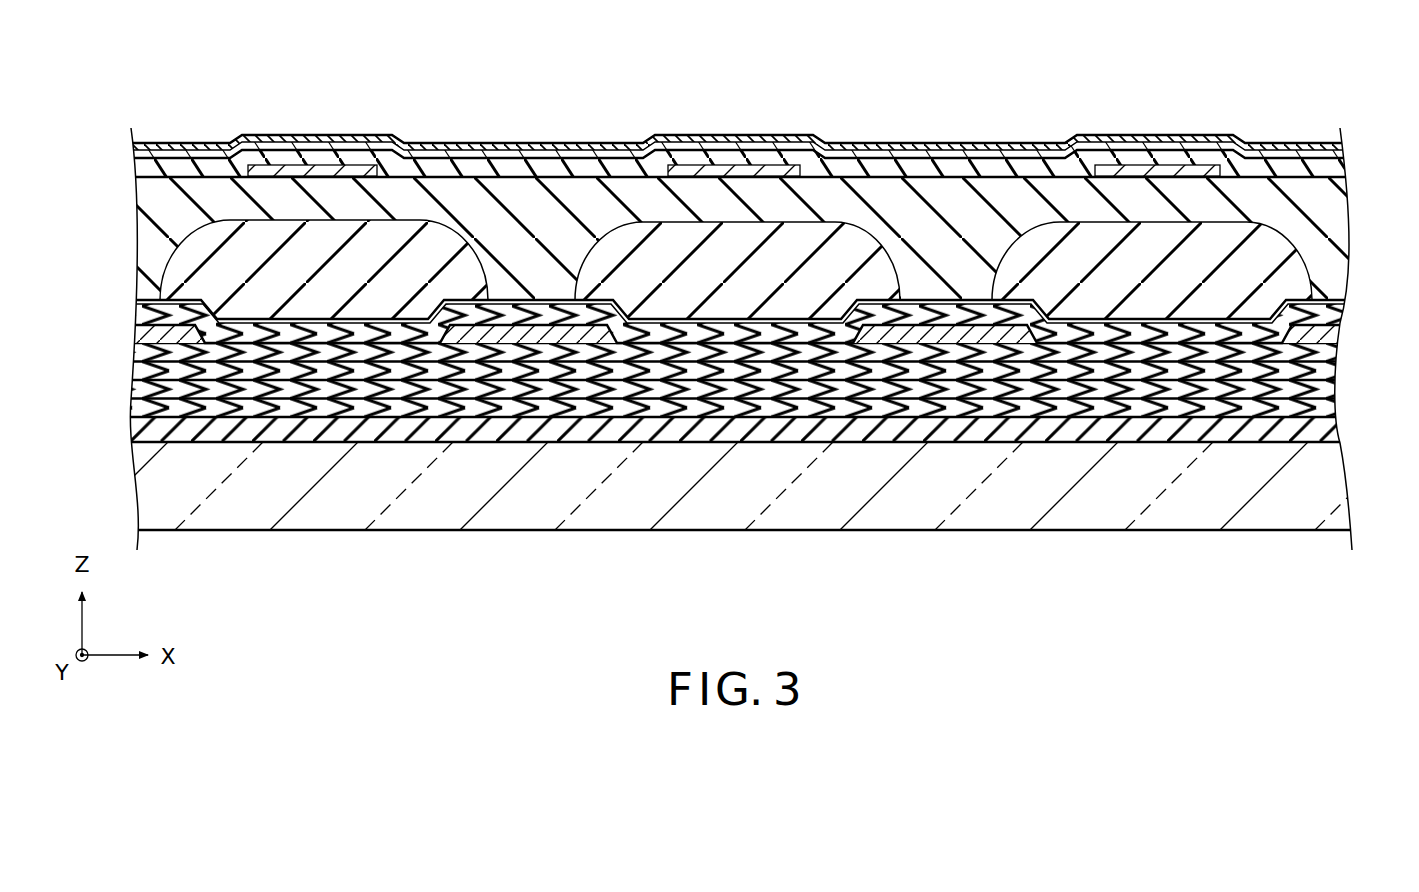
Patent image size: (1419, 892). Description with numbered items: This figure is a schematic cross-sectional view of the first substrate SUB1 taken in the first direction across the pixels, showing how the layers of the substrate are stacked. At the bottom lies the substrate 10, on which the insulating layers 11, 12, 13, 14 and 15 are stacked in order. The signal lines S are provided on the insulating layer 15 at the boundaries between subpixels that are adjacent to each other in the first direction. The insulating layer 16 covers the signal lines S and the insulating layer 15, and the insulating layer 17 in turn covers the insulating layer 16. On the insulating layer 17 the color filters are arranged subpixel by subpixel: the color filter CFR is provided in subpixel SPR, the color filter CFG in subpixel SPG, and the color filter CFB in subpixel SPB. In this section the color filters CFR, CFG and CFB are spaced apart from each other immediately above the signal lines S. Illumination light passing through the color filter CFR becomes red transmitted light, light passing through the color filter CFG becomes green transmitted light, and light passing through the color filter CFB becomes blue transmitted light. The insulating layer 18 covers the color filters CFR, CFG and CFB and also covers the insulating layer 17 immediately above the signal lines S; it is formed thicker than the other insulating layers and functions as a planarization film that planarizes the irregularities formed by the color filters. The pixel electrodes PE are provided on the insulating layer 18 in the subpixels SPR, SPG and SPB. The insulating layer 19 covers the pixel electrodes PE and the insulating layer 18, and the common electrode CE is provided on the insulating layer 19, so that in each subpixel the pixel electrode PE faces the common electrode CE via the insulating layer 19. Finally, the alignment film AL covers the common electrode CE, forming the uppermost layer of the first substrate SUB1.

The first substrate SUB1 is at (1340, 95).
The substrate 10 is at (1340, 470).
The insulating layer 11 is at (1334, 433).
The insulating layer 12 is at (1334, 407).
The insulating layer 13 is at (1334, 390).
The insulating layer 14 is at (1334, 370).
The insulating layer 15 is at (1334, 352).
The insulating layer 16 is at (1338, 318).
The insulating layer 17 is at (1338, 302).
The insulating layer 18 is at (1338, 225).
The insulating layer 19 is at (1338, 167).
The signal line S is at (137, 330).
The color filter CFR is at (343, 228).
The color filter CFG is at (765, 228).
The color filter CFB is at (1165, 228).
The pixel electrode PE is at (358, 168).
The common electrode CE is at (578, 153).
The alignment film AL is at (1240, 146).
The subpixel SPR is at (308, 113).
The subpixel SPG is at (723, 113).
The subpixel SPB is at (1140, 113).